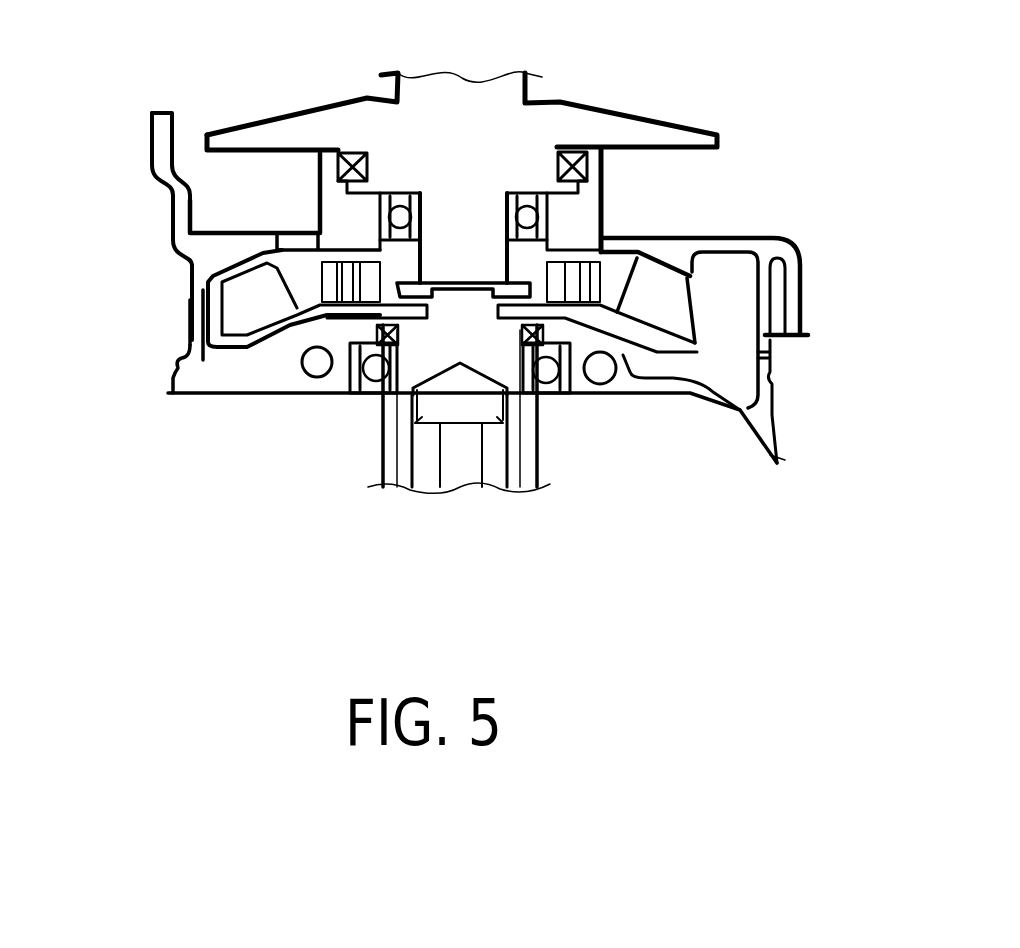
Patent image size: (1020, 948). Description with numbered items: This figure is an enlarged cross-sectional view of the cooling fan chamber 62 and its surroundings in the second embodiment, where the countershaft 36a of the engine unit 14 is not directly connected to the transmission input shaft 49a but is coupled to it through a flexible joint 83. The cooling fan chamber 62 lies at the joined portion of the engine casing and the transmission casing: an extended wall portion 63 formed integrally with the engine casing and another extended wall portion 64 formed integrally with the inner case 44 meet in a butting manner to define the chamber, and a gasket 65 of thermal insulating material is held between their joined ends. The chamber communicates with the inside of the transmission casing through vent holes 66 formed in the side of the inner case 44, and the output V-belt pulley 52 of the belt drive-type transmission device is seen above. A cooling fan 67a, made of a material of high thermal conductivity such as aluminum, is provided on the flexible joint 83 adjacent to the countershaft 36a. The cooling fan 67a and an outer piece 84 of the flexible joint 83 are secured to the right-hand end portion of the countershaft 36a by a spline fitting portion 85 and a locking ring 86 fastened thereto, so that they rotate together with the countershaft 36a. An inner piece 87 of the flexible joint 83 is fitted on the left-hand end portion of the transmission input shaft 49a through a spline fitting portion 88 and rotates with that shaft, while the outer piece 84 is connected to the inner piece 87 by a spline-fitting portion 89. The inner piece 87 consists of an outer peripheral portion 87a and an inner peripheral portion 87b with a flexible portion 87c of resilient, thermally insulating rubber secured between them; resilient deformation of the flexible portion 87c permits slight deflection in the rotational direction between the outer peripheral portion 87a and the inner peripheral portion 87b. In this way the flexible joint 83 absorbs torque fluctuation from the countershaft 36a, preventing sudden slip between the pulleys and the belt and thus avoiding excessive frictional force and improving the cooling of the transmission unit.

The engine unit 14 is at (195, 395).
The countershaft 36a is at (397, 447).
The inner case 44 is at (150, 131).
The transmission input shaft 49a is at (462, 88).
The output V-belt pulley 52 is at (287, 118).
The cooling fan chamber 62 is at (295, 268).
The extended wall portion 63 is at (180, 357).
The extended wall portion 64 is at (203, 307).
The gasket 65 is at (192, 342).
The vent holes 66 is at (303, 235).
The cooling fan 67a is at (268, 320).
The flexible joint 83 is at (860, 152).
The outer piece 84 is at (597, 290).
The spline fitting portion 85 is at (477, 297).
The locking ring 86 is at (510, 307).
The inner piece 87 is at (812, 140).
The outer peripheral portion 87a is at (575, 280).
The inner peripheral portion 87b is at (565, 237).
The flexible portion 87c is at (565, 258).
The spline fitting portion 88 is at (497, 273).
The spline-fitting portion 89 is at (575, 265).